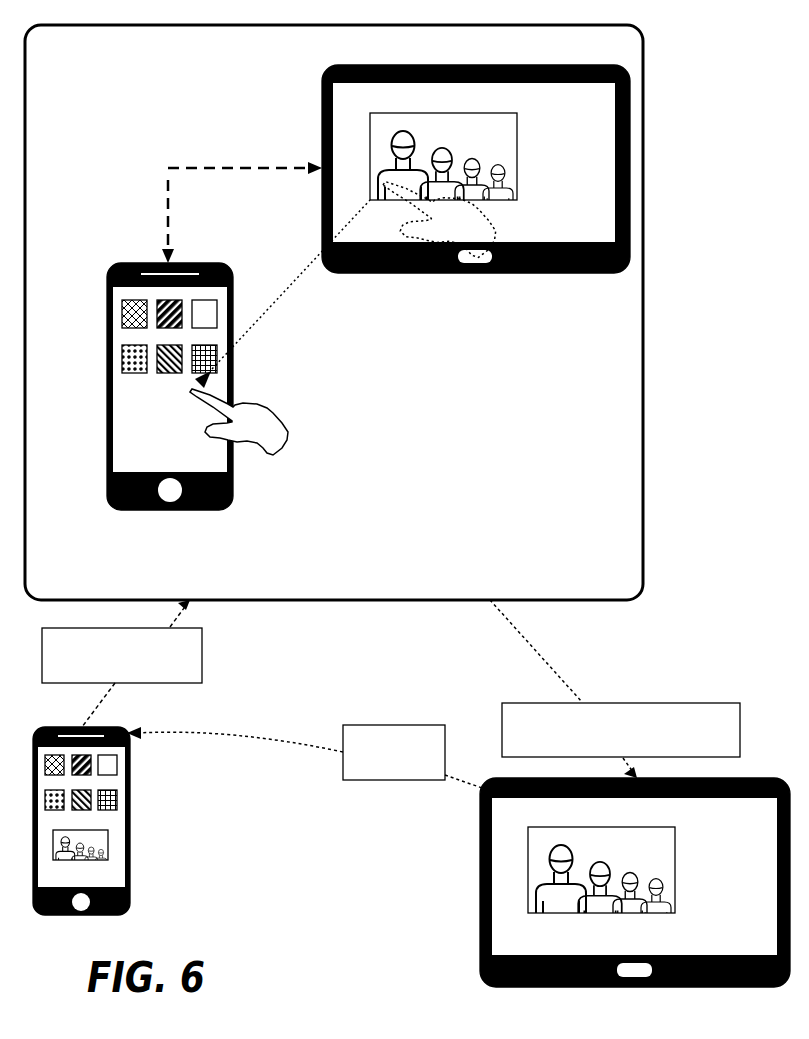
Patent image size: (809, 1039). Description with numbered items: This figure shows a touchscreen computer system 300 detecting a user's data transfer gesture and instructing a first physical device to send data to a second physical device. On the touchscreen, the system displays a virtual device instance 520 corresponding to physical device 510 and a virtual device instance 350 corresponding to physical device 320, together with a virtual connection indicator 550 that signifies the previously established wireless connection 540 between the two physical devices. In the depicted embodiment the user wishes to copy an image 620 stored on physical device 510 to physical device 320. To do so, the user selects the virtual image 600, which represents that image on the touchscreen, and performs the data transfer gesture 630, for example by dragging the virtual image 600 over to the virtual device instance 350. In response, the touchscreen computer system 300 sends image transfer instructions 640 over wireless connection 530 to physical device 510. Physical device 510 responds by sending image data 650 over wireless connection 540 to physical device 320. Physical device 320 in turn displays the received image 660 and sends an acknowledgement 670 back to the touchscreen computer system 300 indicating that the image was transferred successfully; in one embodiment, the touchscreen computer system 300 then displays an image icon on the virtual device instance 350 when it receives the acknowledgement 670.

The touchscreen computer system 300 is at (334, 312).
The virtual device instance 520 is at (322, 88).
The virtual image 600 is at (510, 183).
The virtual connection indicator 550 is at (168, 200).
The virtual device instance 350 is at (170, 508).
The data transfer gesture 630 is at (263, 303).
The acknowledgement 670 is at (122, 663).
The wireless connection 540 is at (202, 735).
The image data 650 is at (414, 757).
The wireless connection 530 is at (570, 683).
The image transfer instructions 640 is at (621, 740).
The physical device 320 is at (130, 818).
The image 660 is at (108, 858).
The physical device 510 is at (480, 855).
The image 620 is at (537, 878).